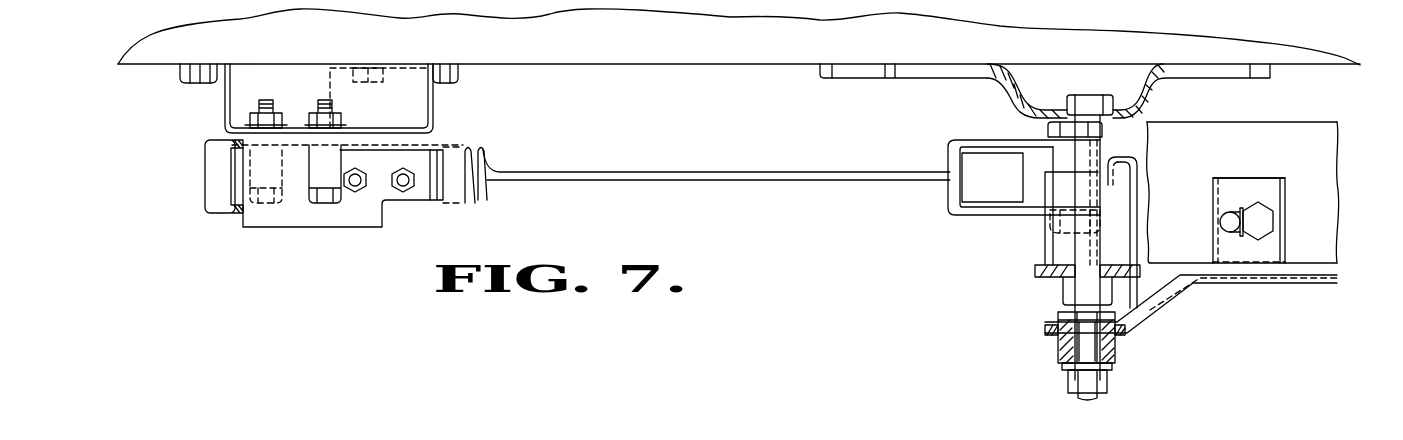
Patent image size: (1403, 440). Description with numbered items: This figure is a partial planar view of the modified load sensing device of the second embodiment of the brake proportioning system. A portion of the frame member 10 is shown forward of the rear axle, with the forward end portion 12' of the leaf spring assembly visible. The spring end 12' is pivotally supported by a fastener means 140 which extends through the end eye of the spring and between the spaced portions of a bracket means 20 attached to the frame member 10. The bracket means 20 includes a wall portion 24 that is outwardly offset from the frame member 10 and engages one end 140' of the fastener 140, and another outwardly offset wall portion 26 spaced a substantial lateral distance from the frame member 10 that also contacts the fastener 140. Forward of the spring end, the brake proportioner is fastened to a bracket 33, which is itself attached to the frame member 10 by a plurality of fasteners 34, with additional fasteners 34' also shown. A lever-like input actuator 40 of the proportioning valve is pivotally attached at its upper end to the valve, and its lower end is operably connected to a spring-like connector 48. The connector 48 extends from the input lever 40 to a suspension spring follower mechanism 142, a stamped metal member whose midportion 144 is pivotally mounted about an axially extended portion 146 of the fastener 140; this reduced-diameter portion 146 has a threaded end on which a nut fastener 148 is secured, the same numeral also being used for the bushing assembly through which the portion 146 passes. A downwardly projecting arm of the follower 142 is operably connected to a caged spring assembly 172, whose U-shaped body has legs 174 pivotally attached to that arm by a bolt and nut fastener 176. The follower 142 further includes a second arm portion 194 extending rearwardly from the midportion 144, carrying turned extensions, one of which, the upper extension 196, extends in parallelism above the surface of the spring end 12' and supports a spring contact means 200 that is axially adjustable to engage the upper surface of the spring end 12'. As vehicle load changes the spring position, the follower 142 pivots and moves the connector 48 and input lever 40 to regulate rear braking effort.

The frame member 10 is at (712, 48).
The forward end portion of the leaf spring assembly 12' is at (1243, 174).
The bracket means 20 is at (1013, 88).
The wall portion 24 is at (1124, 111).
The outwardly offset wall portion 26 is at (1054, 278).
The bracket 33 is at (434, 118).
The fasteners 34 is at (320, 93).
The bolts 34' is at (295, 188).
The lever-like input actuator 40 is at (205, 181).
The spring-like connector 48 is at (479, 203).
The fastener means 140 is at (1051, 270).
The end of the fastener 140' is at (1091, 206).
The suspension spring follower mechanism 142 is at (1194, 288).
The midportion 144 is at (1045, 328).
The axially extended portion of the fastener 146 is at (1087, 347).
The nut fastener 148 is at (1117, 352).
The caged spring assembly 172 is at (956, 217).
The legs 174 is at (1003, 140).
The bolt and nut fastener 176 is at (1044, 129).
The second arm portion 194 is at (1288, 235).
The upper extension 196 is at (1272, 192).
The spring contact means 200 is at (1230, 206).